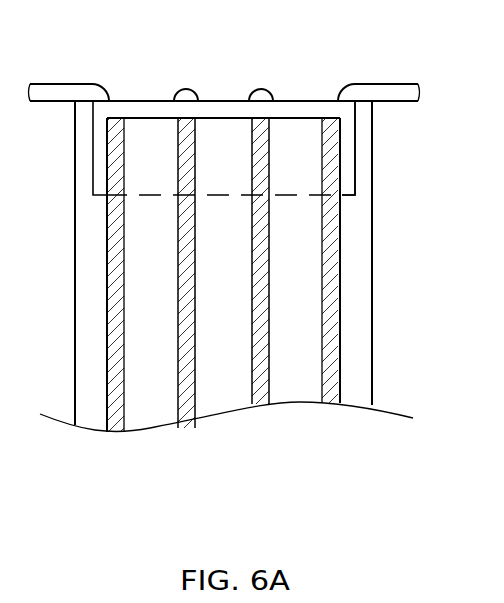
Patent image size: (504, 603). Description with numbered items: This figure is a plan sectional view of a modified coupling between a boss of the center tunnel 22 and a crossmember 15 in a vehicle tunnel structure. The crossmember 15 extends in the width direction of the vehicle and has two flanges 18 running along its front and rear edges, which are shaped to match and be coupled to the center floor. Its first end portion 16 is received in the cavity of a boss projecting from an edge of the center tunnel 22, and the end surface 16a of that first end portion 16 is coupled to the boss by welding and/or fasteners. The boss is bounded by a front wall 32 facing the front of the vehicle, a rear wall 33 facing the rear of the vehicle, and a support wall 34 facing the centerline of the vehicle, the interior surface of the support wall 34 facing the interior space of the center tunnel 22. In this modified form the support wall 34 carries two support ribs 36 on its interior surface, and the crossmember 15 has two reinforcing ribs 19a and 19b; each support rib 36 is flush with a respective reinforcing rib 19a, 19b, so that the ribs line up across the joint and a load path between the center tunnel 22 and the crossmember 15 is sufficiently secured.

The crossmember 15 is at (388, 328).
The first end portion 16 is at (358, 180).
The end surface 16a is at (300, 117).
The flange 18 is at (363, 270).
The reinforcing rib 19a is at (177, 402).
The reinforcing rib 19b is at (255, 375).
The center tunnel 22 is at (59, 84).
The front wall 32 is at (95, 165).
The rear wall 33 is at (351, 155).
The support wall 34 is at (223, 101).
The support rib 36 is at (185, 88).